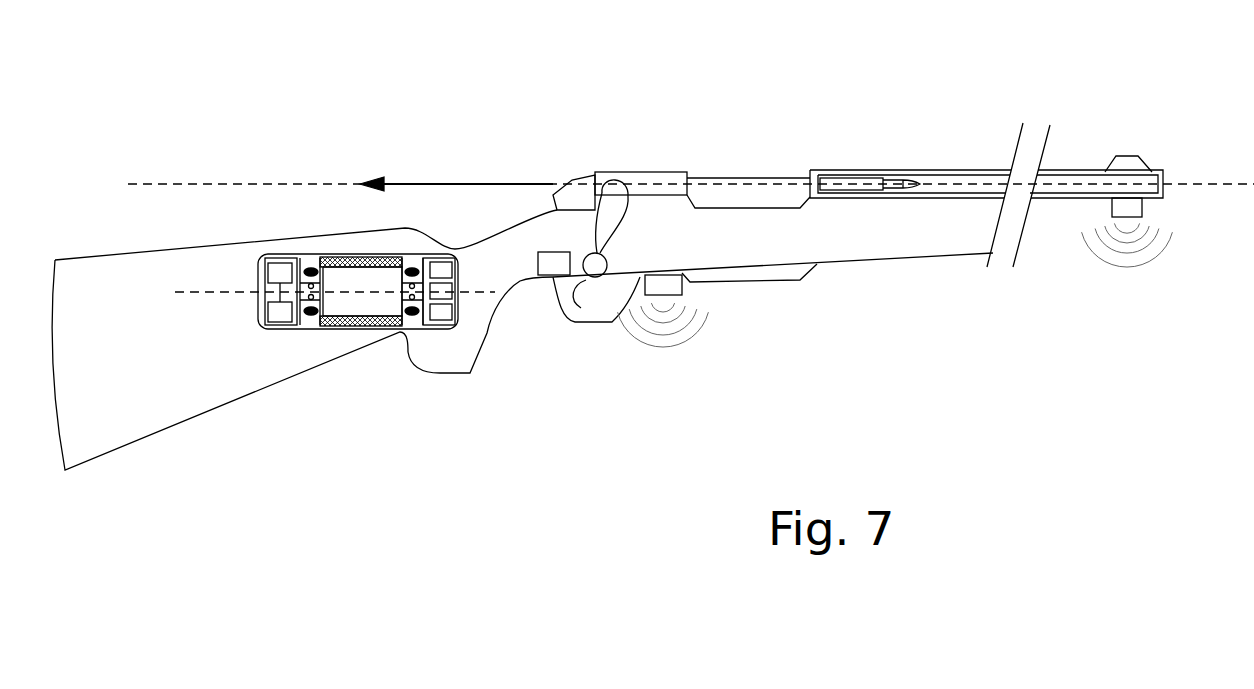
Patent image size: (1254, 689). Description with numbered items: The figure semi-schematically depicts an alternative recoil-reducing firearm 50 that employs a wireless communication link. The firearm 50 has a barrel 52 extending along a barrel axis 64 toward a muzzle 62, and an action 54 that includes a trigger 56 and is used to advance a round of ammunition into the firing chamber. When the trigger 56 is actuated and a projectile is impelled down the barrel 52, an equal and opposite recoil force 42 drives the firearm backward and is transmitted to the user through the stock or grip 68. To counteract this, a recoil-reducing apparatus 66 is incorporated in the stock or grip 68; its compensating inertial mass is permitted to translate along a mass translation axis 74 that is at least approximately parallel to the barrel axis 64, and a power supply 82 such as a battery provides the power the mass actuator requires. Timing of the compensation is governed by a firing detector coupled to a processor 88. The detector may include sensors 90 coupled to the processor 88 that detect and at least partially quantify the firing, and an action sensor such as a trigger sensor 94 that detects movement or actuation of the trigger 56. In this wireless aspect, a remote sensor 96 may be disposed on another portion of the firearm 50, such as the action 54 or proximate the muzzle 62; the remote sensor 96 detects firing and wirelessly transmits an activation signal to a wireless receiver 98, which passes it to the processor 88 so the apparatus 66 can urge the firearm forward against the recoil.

The firearm 50 is at (445, 78).
The recoil force 42 is at (452, 183).
The barrel axis 64 is at (248, 183).
The stock or grip 68 is at (262, 402).
The mass translation axis 74 is at (203, 292).
The action 54 is at (719, 146).
The barrel 52 is at (985, 170).
The muzzle 62 is at (1165, 182).
The trigger 56 is at (578, 302).
The trigger sensor 94 is at (543, 275).
The remote sensor 96 is at (660, 295).
The recoil-reducing apparatus 66 is at (362, 329).
The processor 88 is at (263, 270).
The power supply 82 is at (263, 312).
The sensor 90 is at (460, 267).
The wireless receiver 98 is at (460, 300).